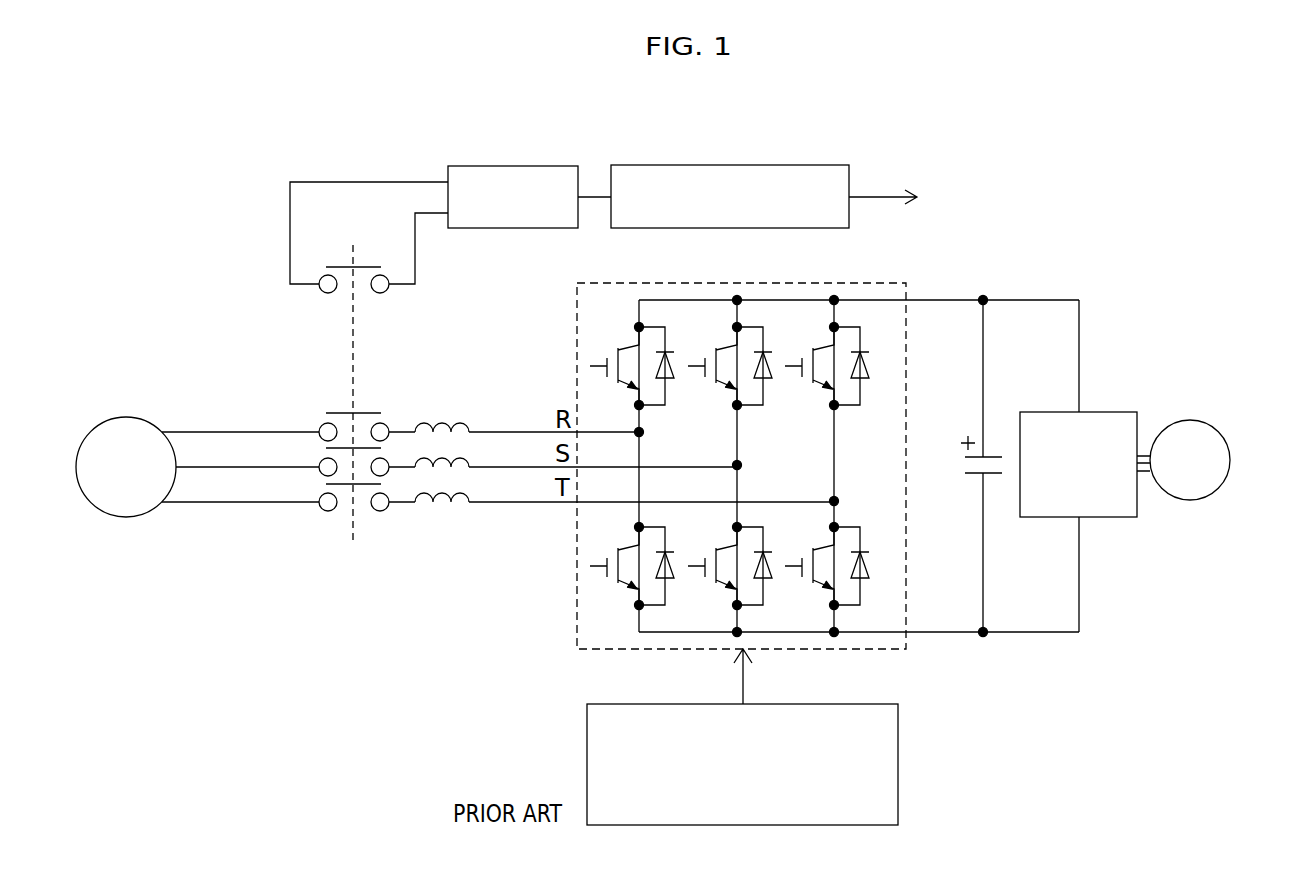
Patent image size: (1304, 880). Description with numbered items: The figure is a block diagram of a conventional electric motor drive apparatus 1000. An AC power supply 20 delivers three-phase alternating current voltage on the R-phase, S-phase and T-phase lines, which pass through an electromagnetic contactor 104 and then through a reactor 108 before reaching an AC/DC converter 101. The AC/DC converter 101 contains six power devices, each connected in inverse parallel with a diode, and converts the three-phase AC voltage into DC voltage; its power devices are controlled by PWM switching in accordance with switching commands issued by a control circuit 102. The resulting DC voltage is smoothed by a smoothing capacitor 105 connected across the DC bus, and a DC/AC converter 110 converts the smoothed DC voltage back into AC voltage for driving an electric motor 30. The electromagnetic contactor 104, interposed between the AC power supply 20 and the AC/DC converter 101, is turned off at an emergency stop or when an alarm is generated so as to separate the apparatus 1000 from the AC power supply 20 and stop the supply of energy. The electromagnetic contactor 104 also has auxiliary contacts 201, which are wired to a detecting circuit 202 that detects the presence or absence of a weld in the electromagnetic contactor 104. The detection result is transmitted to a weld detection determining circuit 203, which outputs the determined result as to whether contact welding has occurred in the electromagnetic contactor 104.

The electric motor drive apparatus 1000 is at (872, 157).
The AC power supply 20 is at (138, 518).
The electric motor 30 is at (1187, 422).
The AC/DC converter 101 is at (863, 282).
The control circuit 102 is at (898, 763).
The electromagnetic contactor 104 is at (343, 522).
The smoothing capacitor 105 is at (973, 482).
The reactor 108 is at (457, 505).
The DC/AC converter 110 is at (1090, 410).
The auxiliary contacts 201 is at (370, 300).
The detecting circuit 202 is at (513, 165).
The weld detection determining circuit 203 is at (707, 165).